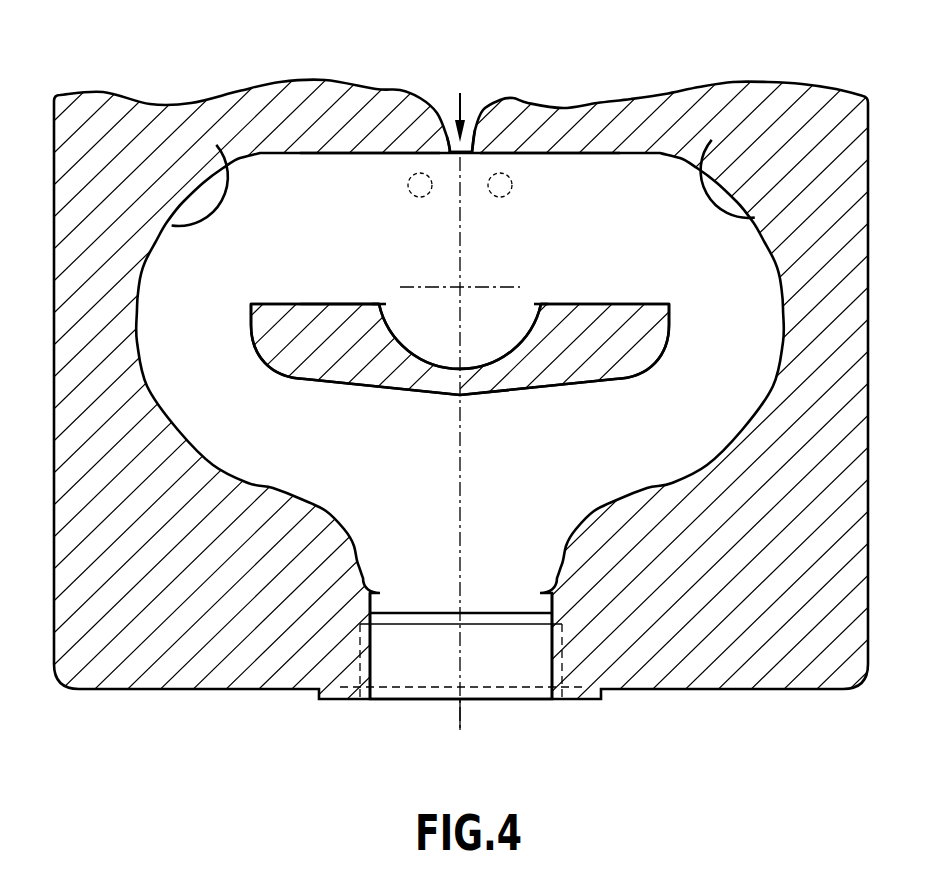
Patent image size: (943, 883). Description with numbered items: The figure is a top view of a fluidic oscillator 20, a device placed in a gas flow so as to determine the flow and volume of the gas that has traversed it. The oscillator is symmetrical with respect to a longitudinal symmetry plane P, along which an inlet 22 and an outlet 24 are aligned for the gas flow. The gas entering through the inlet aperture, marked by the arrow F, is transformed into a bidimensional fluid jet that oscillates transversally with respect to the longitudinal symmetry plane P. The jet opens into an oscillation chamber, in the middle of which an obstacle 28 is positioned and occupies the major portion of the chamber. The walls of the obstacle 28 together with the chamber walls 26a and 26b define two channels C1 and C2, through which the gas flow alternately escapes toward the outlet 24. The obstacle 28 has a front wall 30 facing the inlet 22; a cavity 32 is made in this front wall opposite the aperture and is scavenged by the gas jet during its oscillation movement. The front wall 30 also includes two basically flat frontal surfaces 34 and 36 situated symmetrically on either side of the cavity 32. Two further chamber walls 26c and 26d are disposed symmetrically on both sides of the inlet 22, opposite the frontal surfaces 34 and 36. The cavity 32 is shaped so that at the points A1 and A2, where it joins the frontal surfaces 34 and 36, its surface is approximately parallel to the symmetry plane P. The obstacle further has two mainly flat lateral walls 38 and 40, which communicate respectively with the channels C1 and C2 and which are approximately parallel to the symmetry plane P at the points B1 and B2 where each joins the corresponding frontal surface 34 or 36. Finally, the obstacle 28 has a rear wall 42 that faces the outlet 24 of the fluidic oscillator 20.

The fluidic oscillator 20 is at (252, 453).
The inlet 22 is at (451, 150).
The outlet 24 is at (523, 602).
The wall of the oscillation chamber 26a is at (712, 140).
The wall of the oscillation chamber 26b is at (216, 145).
The wall of the oscillation chamber 26c is at (546, 152).
The wall of the oscillation chamber 26d is at (366, 152).
The obstacle 28 is at (504, 378).
The front wall 30 is at (346, 280).
The cavity 32 is at (482, 320).
The frontal surface 34 is at (607, 304).
The frontal surface 36 is at (300, 304).
The lateral wall 38 is at (665, 339).
The lateral wall 40 is at (253, 342).
The rear wall 42 is at (417, 388).
The point where the cavity joins the front surface A1 is at (542, 304).
The point where the cavity joins the front surface A2 is at (379, 304).
The point where the lateral wall joins the front surface B1 is at (667, 311).
The point where the lateral wall joins the front surface B2 is at (252, 313).
The channel C1 is at (687, 421).
The channel C2 is at (285, 421).
The arrow marking the gas flow F is at (468, 111).
The longitudinal symmetry plane P is at (461, 713).